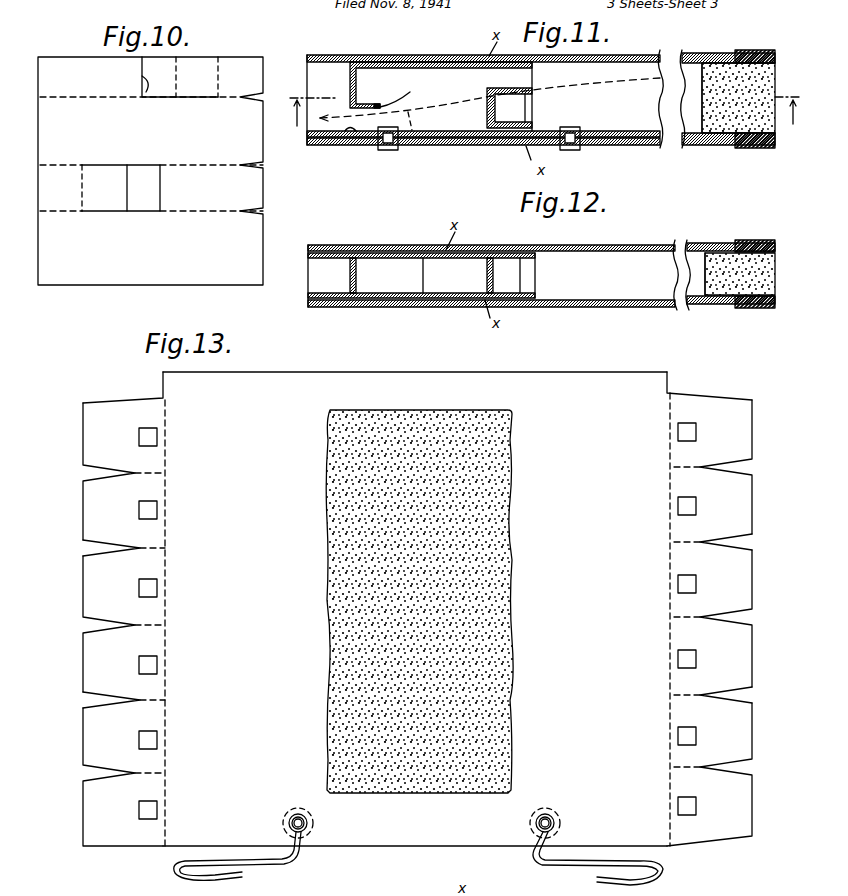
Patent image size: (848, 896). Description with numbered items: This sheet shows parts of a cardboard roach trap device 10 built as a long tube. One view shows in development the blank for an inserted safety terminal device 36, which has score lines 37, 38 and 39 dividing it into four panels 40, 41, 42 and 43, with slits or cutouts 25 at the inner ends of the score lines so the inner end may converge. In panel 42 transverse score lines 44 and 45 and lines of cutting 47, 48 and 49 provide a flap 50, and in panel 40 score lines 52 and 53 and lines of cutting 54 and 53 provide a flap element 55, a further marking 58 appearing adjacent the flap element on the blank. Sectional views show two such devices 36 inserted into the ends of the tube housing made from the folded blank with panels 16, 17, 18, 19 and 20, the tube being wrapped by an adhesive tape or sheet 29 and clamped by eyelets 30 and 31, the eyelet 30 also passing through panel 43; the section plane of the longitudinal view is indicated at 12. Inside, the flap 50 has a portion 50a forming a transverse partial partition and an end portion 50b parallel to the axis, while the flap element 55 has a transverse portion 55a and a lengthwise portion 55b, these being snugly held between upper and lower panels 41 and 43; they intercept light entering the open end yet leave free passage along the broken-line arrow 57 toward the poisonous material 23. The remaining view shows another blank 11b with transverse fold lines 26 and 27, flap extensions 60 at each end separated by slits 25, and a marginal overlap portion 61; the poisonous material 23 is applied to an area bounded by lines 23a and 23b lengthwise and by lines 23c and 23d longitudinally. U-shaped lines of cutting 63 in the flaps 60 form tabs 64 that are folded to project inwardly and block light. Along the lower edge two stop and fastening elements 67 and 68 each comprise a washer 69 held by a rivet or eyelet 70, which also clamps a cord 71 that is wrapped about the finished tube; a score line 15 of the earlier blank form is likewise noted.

In FIG. 11, the device 10 is at (697, 46).
In FIG. 12, the device 10 is at (489, 242).
In FIG. 13, the blank 11b is at (658, 371).
In FIG. 11, the score line 12 is at (552, 123).
In FIG. 13, the score line 15 is at (600, 884).
In FIG. 11, the panel 16 is at (516, 145).
In FIG. 12, the panel 17 is at (689, 250).
In FIG. 11, the panel 18 is at (441, 55).
In FIG. 12, the panel 18 is at (636, 250).
In FIG. 11, the panel 19 is at (612, 134).
In FIG. 12, the panel 19 is at (700, 318).
In FIG. 11, the panel 20 is at (468, 144).
In FIG. 11, the poisonous material 23 is at (756, 75).
In FIG. 12, the poisonous material 23 is at (756, 275).
In FIG. 13, the poisonous material 23 is at (523, 560).
In FIG. 11, the boundary line 23a is at (714, 90).
In FIG. 12, the boundary line 23a is at (705, 275).
In FIG. 13, the boundary line 23a is at (328, 622).
In FIG. 13, the boundary line 23b is at (512, 622).
In FIG. 13, the boundary line 23c is at (429, 410).
In FIG. 13, the boundary line 23d is at (418, 793).
In FIG. 10, the slits or cutouts 25 is at (263, 97).
In FIG. 11, the slits or cutouts 25 is at (534, 66).
In FIG. 12, the slits or cutouts 25 is at (537, 259).
In FIG. 13, the slits or cutouts 25 is at (83, 548).
In FIG. 13, the fold line 26 is at (167, 610).
In FIG. 13, the fold line 27 is at (668, 630).
In FIG. 11, the adhesive tape or sheet 29 is at (750, 50).
In FIG. 12, the adhesive tape or sheet 29 is at (750, 309).
In FIG. 13, the adhesive tape or sheet 29 is at (738, 886).
In FIG. 11, the eyelet 30 is at (388, 151).
In FIG. 11, the eyelet 31 is at (568, 151).
In FIG. 10, the safety terminal device 36 is at (271, 229).
In FIG. 11, the safety terminal device 36 is at (544, 103).
In FIG. 12, the safety terminal device 36 is at (545, 274).
In FIG. 10, the score line 37 is at (60, 98).
In FIG. 10, the score line 38 is at (210, 163).
In FIG. 10, the score line 39 is at (208, 212).
In FIG. 10, the panel 40 is at (150, 171).
In FIG. 10, the panel 41 is at (97, 127).
In FIG. 12, the panel 41 is at (380, 257).
In FIG. 10, the panel 42 is at (189, 192).
In FIG. 11, the panel 42 is at (340, 56).
In FIG. 12, the panel 42 is at (460, 288).
In FIG. 10, the panel 43 is at (141, 247).
In FIG. 11, the panel 43 is at (350, 134).
In FIG. 12, the panel 43 is at (386, 300).
In FIG. 10, the score line 44 is at (85, 186).
In FIG. 10, the score line 45 is at (128, 178).
In FIG. 10, the line of cutting 47 is at (142, 164).
In FIG. 12, the line of cutting 47 is at (363, 283).
In FIG. 10, the line of cutting 48 is at (162, 177).
In FIG. 12, the line of cutting 48 is at (421, 280).
In FIG. 10, the line of cutting 49 is at (134, 211).
In FIG. 10, the flap 50 is at (104, 211).
In FIG. 11, the flap 50 is at (345, 82).
In FIG. 11, the flap portion 50a is at (323, 78).
In FIG. 12, the flap portion 50a is at (350, 276).
In FIG. 11, the flap end portion 50b is at (383, 106).
In FIG. 10, the score line 52 is at (243, 77).
In FIG. 10, the score line 53 is at (232, 77).
In FIG. 10, the line of cutting 54 is at (198, 92).
In FIG. 10, the flap element 55 is at (212, 60).
In FIG. 11, the flap element 55 is at (486, 111).
In FIG. 11, the flap portion 55a is at (534, 116).
In FIG. 12, the flap portion 55a is at (488, 276).
In FIG. 11, the flap portion 55b is at (534, 91).
In FIG. 12, the flap portion 55b is at (537, 285).
In FIG. 11, the arrow 57 is at (410, 142).
In FIG. 10, the tab 58 is at (151, 90).
In FIG. 13, the flap extension 60 is at (83, 481).
In FIG. 13, the marginal overlap portion 61 is at (160, 398).
In FIG. 13, the line of cutting 63 is at (139, 510).
In FIG. 13, the tab 64 is at (139, 437).
In FIG. 13, the stop and fastening element 67 is at (276, 826).
In FIG. 13, the stop and fastening element 68 is at (565, 817).
In FIG. 13, the washer 69 is at (316, 827).
In FIG. 13, the rivet or eyelet 70 is at (312, 817).
In FIG. 13, the cord 71 is at (268, 855).